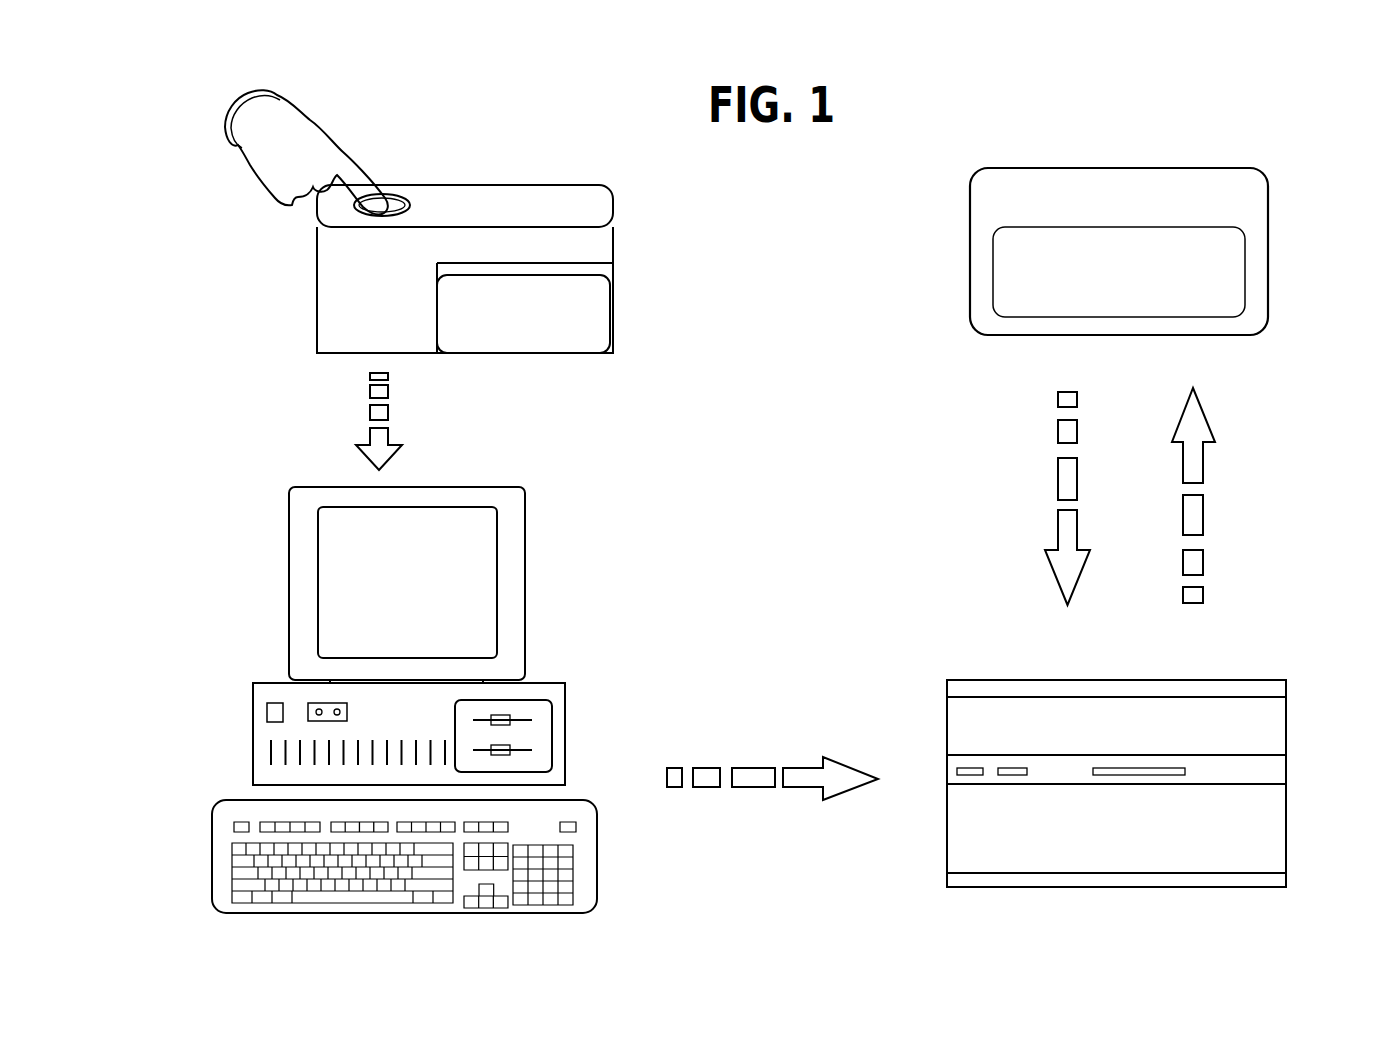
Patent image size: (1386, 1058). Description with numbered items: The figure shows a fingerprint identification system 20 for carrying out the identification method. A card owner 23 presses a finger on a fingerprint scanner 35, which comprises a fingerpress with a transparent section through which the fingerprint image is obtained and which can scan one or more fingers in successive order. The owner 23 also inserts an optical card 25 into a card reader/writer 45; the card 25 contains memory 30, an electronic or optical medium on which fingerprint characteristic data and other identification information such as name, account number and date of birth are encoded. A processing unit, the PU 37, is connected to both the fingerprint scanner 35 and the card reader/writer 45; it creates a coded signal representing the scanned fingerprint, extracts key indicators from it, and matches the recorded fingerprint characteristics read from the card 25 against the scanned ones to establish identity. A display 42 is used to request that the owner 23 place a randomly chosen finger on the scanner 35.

The fingerprint identification system 20 is at (766, 360).
The card owner 23 is at (258, 172).
The optical card 25 is at (1274, 311).
The memory 30 is at (1236, 267).
The fingerprint scanner 35 is at (601, 323).
The PU 37 is at (592, 646).
The display 42 is at (513, 583).
The card reader/writer 45 is at (1262, 688).